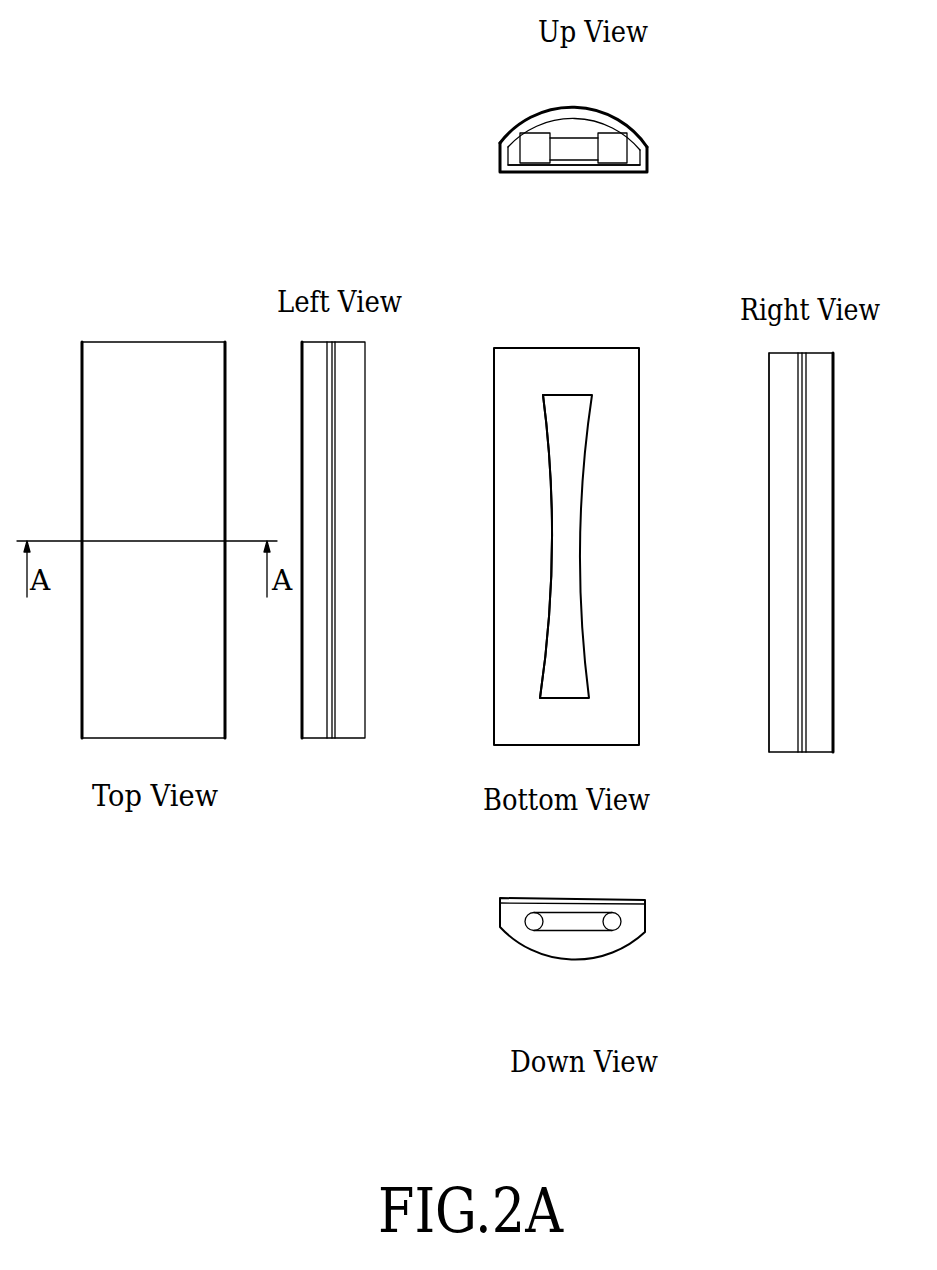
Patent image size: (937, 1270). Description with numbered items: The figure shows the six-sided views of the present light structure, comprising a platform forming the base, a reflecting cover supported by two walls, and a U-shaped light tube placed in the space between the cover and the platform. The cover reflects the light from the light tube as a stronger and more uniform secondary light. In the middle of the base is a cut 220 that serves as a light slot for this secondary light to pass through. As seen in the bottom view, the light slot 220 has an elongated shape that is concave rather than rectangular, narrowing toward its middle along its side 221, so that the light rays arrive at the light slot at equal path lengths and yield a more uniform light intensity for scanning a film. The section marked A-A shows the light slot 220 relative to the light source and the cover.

The light slot 220 is at (582, 683).
The groove side wall 221 is at (550, 515).